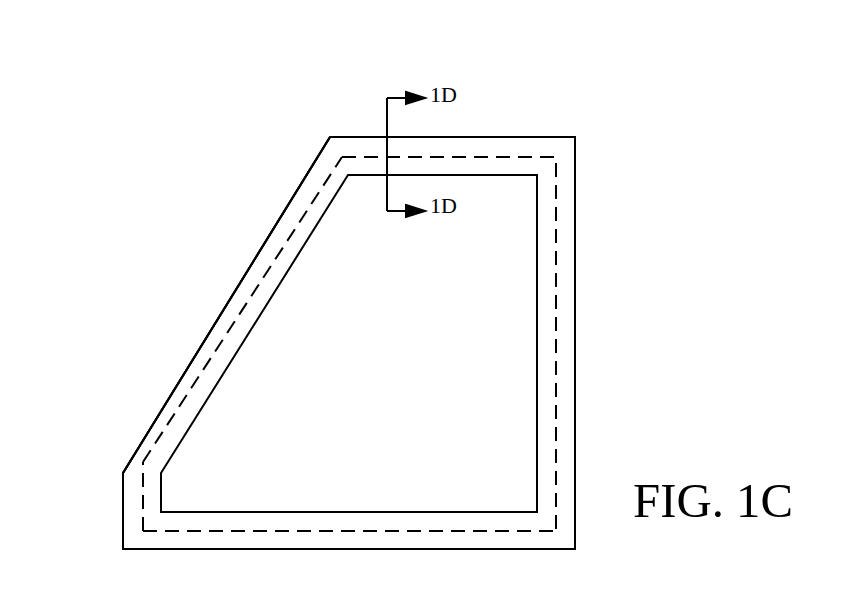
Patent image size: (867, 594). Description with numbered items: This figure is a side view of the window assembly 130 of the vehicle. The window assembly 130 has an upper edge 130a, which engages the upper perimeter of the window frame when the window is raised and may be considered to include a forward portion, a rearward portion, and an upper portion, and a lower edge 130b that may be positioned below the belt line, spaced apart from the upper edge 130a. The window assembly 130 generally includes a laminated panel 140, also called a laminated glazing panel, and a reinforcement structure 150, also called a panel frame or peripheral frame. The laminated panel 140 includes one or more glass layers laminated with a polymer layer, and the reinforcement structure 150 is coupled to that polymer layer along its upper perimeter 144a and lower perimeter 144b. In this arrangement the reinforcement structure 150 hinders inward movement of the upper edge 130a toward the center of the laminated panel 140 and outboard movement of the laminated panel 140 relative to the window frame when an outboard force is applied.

The window assembly 130 is at (573, 100).
The upper edge 130a is at (238, 285).
The lower edge 130b is at (347, 549).
The laminated panel 140 is at (480, 230).
The upper perimeter 144a is at (200, 377).
The lower perimeter 144b is at (462, 532).
The reinforcement structure 150 is at (292, 210).